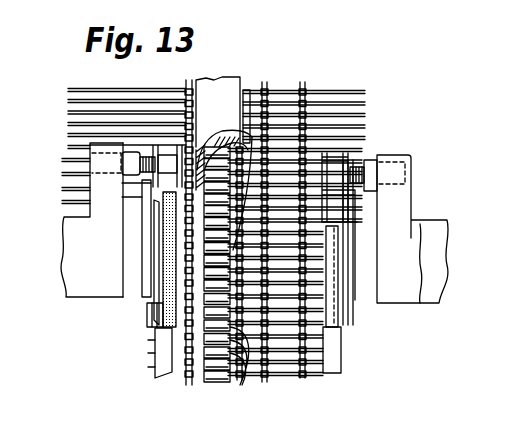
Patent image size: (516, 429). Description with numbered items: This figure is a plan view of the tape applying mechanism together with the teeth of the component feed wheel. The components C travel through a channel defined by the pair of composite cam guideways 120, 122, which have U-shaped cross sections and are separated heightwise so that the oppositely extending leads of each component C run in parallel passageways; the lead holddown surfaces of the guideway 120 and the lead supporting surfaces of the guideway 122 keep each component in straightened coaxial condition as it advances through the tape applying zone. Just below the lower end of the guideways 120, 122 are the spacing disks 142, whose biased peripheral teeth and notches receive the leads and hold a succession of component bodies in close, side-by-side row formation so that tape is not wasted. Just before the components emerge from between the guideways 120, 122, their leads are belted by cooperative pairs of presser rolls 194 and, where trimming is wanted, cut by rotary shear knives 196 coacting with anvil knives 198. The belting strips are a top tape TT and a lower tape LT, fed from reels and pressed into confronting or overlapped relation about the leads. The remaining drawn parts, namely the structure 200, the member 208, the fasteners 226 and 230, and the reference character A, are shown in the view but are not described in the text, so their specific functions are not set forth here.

The composite cam guideway 120 is at (212, 80).
The flexible link 208 is at (242, 168).
The bolt 226 is at (365, 160).
The bolt 230 is at (138, 220).
The housing 200 is at (64, 244).
The rotary shear knife 196 is at (142, 268).
The composite cam guideway 122 is at (154, 296).
The anvil knife 198 is at (150, 318).
The presser roll 194 is at (162, 334).
The spacing disk 142 is at (188, 384).
The lower tape LT is at (355, 211).
The top tape TT is at (152, 363).
The component C is at (213, 380).
The view direction A is at (503, 365).